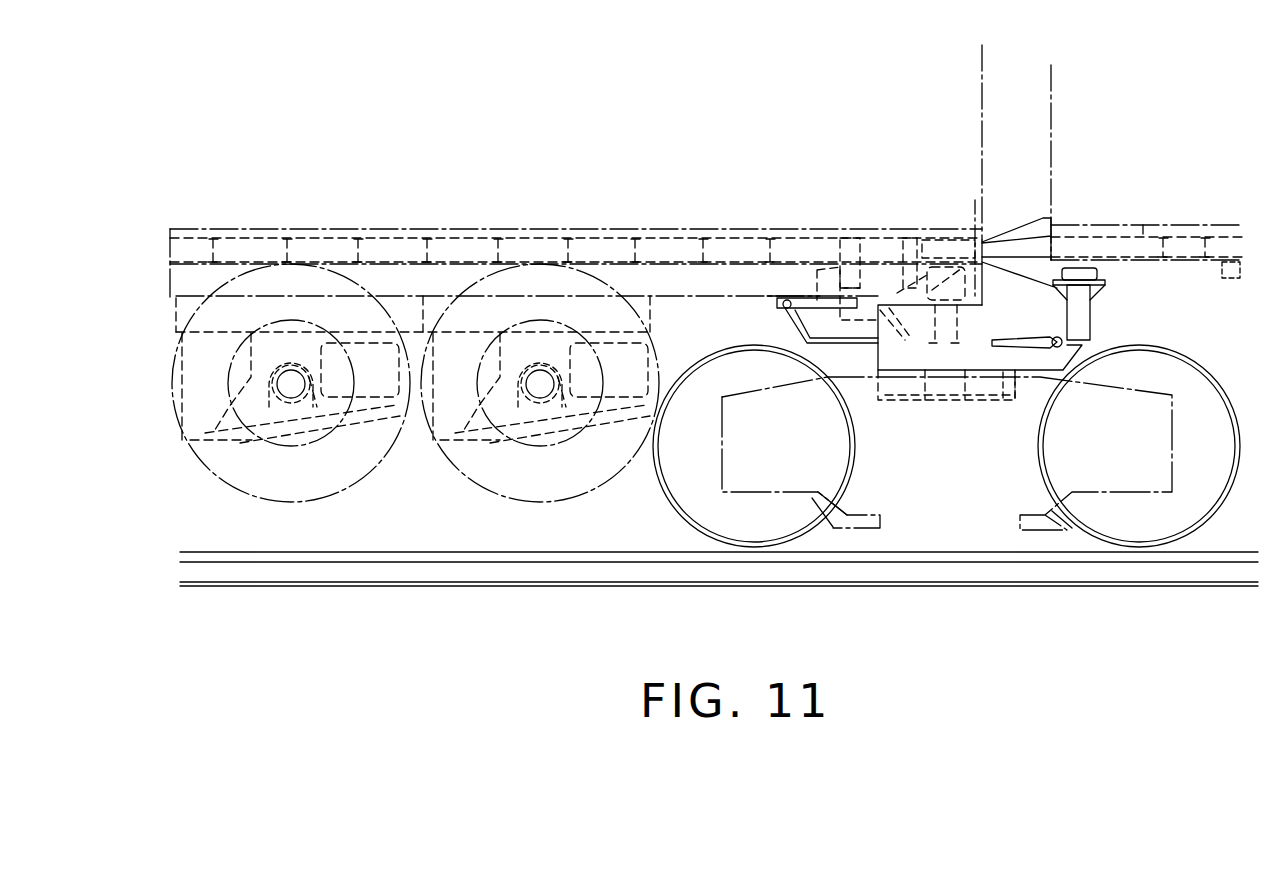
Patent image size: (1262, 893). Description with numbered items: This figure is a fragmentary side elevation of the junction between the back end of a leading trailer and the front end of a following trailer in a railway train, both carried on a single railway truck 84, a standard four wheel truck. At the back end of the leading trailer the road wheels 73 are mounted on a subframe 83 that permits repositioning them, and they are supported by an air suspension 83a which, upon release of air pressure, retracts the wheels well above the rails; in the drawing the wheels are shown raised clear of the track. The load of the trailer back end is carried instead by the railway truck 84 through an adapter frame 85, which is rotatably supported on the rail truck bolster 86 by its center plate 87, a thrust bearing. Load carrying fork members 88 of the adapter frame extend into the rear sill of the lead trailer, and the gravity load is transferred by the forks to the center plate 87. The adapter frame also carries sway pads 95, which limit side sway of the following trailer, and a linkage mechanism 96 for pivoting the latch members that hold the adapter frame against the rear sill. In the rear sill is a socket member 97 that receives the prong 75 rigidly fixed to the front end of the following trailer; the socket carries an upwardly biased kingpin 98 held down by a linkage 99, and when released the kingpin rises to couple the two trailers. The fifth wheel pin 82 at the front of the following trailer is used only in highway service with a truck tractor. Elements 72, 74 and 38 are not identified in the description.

The vertical posts 72 is at (1050, 112).
The road wheels 73 is at (440, 461).
The rails 74 is at (372, 552).
The prong 75 is at (1013, 240).
The fifth wheel pin 82 is at (1224, 268).
The subframe 83 is at (422, 330).
The air suspension 83a is at (658, 357).
The railway truck 84 is at (952, 478).
The adapter frame 85 is at (878, 357).
The rail truck bolster 86 is at (1004, 400).
The center plate 87 is at (950, 405).
The fork members 88 is at (880, 276).
The sway pads 95 is at (1098, 270).
The linkage mechanism 96 is at (1030, 372).
The socket member 97 is at (976, 232).
The kingpin 98 is at (948, 240).
The linkage 99 is at (815, 343).
The brake shoe 38 is at (880, 522).